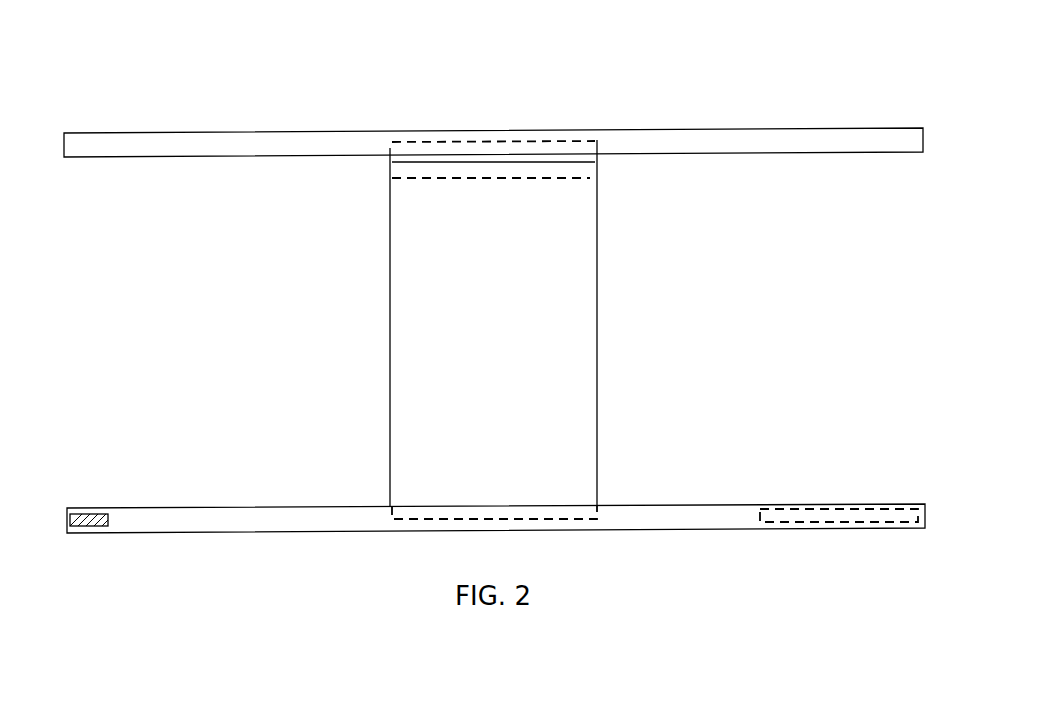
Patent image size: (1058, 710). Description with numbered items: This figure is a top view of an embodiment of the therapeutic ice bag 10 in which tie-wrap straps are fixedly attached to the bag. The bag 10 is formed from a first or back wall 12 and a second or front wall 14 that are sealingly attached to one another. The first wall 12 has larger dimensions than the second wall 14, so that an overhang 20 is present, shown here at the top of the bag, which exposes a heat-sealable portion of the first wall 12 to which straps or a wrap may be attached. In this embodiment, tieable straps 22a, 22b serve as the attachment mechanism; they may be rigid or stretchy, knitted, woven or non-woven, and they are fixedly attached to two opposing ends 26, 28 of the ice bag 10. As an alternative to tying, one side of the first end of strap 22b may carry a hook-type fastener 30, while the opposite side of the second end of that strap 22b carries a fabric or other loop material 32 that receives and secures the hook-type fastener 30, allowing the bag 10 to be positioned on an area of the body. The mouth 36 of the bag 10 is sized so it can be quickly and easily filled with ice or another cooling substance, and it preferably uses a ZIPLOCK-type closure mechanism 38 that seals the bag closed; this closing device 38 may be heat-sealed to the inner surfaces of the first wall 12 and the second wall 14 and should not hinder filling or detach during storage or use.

The therapeutic bag 10 is at (280, 66).
The first wall 12 is at (391, 159).
The second wall 14 is at (482, 348).
The overhang 20 is at (597, 158).
The tieable strap 22a is at (867, 138).
The tieable strap 22b is at (677, 517).
The first end of ice bag 26 is at (447, 142).
The second end of ice bag 28 is at (513, 519).
The hook-type fastener 30 is at (87, 527).
The loop material 32 is at (837, 519).
The mouth 36 is at (588, 140).
The closure mechanism 38 is at (565, 178).